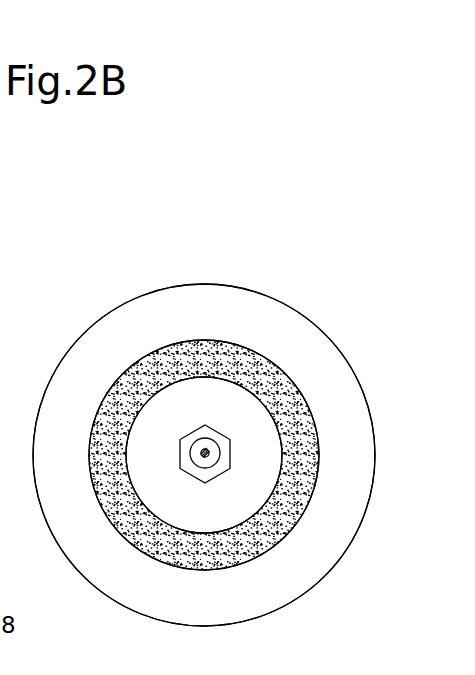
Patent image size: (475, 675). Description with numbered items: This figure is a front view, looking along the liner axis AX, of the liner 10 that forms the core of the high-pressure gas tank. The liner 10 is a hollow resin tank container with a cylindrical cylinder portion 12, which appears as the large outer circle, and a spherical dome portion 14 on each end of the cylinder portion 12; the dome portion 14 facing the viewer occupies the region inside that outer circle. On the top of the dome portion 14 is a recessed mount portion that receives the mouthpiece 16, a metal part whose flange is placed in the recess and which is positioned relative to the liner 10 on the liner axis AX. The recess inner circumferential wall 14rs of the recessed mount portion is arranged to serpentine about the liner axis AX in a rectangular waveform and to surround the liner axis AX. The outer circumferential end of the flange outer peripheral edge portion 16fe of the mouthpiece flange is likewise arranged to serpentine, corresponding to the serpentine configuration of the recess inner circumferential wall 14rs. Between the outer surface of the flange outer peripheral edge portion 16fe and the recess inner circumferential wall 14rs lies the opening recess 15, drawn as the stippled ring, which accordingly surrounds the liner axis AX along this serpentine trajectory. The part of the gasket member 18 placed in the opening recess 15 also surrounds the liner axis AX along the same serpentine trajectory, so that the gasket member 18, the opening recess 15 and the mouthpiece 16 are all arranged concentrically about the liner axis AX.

The liner 10 is at (340, 313).
The cylinder portion 12 is at (103, 315).
The dome portion 14 is at (343, 368).
The recess inner circumferential wall 14rs is at (307, 393).
The opening recess 15 is at (315, 490).
The mouthpiece 16 is at (237, 491).
The flange outer peripheral edge portion 16fe is at (292, 372).
The gasket member 18 is at (315, 425).
The liner axis AX is at (205, 453).